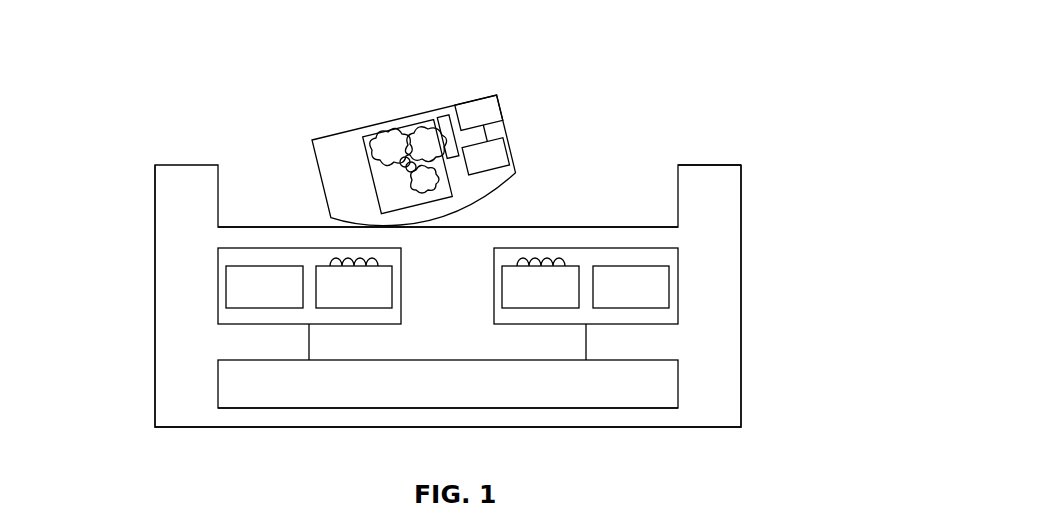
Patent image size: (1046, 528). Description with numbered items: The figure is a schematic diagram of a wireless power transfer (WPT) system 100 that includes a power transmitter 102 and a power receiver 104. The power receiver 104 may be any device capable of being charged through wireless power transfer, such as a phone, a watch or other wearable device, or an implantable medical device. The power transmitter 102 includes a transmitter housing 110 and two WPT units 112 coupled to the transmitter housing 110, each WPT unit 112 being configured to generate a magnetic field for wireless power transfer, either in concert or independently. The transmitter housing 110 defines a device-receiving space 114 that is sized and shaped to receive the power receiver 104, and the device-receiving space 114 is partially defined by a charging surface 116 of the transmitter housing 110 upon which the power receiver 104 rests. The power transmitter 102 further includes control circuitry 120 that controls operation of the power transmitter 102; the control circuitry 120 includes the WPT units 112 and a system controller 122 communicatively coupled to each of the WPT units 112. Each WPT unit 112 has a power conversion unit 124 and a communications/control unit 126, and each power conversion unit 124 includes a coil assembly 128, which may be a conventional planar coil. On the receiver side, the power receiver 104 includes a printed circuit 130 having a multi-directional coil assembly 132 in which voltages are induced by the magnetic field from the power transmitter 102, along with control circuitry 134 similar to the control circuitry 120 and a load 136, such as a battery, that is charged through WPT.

The wireless power transfer (WPT) system 100 is at (726, 58).
The power transmitter 102 is at (760, 207).
The power receiver 104 is at (510, 93).
The transmitter housing 110 is at (741, 320).
The WPT unit 112 is at (217, 288).
The device-receiving space 114 is at (657, 158).
The charging surface 116 is at (583, 227).
The control circuitry 120 is at (707, 388).
The system controller 122 is at (527, 408).
The power conversion unit 124 is at (352, 309).
The communications/control unit 126 is at (262, 309).
The coil assembly 128 is at (340, 250).
The printed circuit 130 is at (383, 147).
The multi-directional coil assembly 132 is at (418, 155).
The control circuitry 134 is at (480, 110).
The load 136 is at (497, 150).